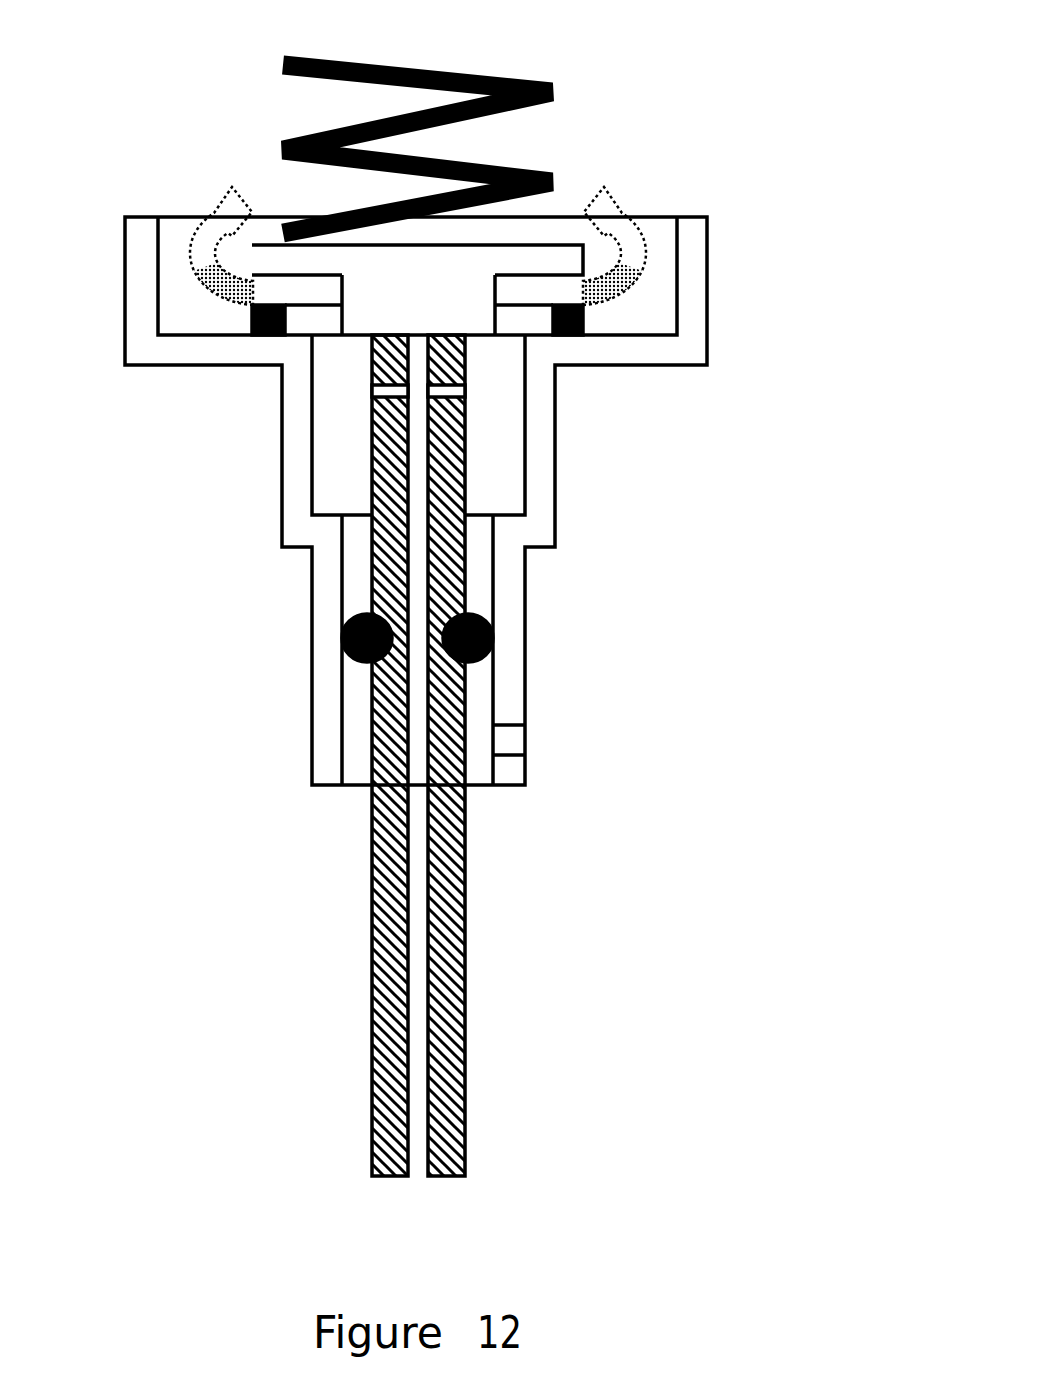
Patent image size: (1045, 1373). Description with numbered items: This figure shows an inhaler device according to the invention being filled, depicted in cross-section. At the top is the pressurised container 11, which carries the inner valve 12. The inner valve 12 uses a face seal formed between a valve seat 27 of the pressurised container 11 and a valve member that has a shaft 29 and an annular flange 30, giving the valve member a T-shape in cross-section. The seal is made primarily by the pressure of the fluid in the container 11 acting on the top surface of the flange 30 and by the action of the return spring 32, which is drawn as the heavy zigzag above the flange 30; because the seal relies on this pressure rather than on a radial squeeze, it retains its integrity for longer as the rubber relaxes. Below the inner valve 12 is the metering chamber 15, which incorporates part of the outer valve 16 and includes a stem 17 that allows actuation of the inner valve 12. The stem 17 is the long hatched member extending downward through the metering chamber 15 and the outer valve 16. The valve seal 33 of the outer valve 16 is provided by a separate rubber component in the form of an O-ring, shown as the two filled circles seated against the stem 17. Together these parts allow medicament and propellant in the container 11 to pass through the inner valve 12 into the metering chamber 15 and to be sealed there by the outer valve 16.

The pressurised container 11 is at (707, 275).
The inner valve 12 is at (690, 173).
The metering chamber 15 is at (343, 395).
The outer valve 16 is at (570, 731).
The stem 17 is at (372, 563).
The valve seat 27 is at (590, 338).
The shaft 29 is at (433, 303).
The annular flange 30 is at (657, 213).
The return spring 32 is at (283, 140).
The valve seal 33 is at (493, 637).